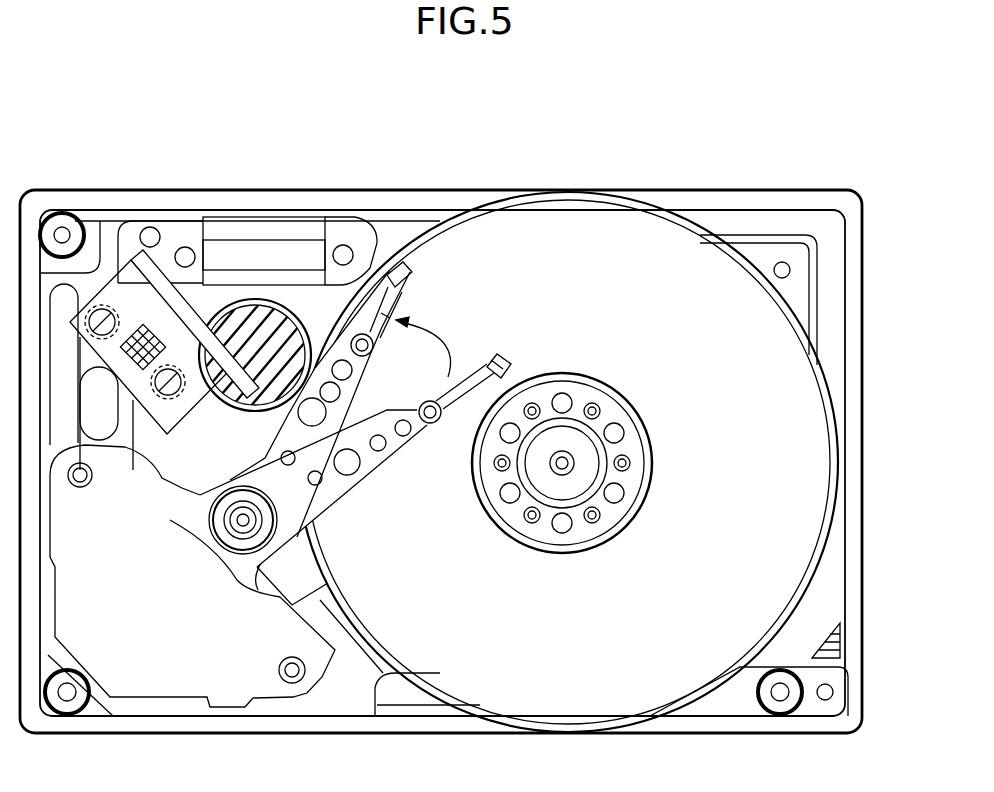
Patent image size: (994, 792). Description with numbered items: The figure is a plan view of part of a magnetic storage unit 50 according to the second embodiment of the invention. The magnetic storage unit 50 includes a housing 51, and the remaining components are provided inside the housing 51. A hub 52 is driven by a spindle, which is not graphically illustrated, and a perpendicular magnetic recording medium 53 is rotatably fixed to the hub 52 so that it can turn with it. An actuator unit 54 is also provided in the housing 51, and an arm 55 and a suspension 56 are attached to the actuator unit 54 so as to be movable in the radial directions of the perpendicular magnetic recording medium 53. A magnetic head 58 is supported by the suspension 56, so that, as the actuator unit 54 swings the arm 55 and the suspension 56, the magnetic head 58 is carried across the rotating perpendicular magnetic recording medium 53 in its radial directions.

The magnetic storage unit 50 is at (163, 128).
The housing 51 is at (305, 190).
The hub 52 is at (625, 535).
The perpendicular magnetic recording medium 53 is at (800, 420).
The actuator unit 54 is at (262, 590).
The arm 55 is at (340, 497).
The suspension 56 is at (463, 377).
The magnetic head 58 is at (505, 362).